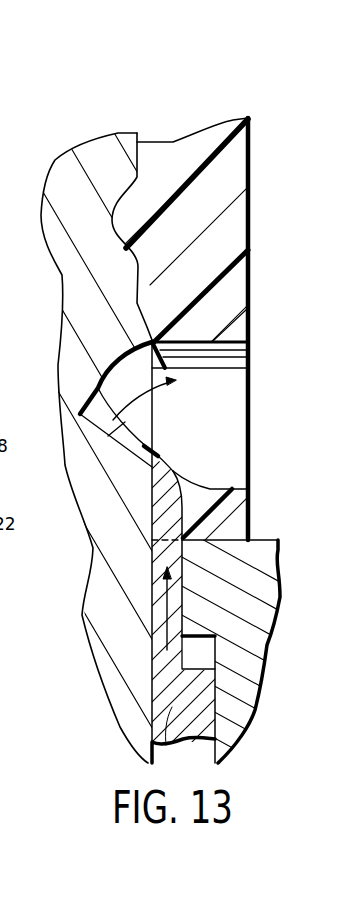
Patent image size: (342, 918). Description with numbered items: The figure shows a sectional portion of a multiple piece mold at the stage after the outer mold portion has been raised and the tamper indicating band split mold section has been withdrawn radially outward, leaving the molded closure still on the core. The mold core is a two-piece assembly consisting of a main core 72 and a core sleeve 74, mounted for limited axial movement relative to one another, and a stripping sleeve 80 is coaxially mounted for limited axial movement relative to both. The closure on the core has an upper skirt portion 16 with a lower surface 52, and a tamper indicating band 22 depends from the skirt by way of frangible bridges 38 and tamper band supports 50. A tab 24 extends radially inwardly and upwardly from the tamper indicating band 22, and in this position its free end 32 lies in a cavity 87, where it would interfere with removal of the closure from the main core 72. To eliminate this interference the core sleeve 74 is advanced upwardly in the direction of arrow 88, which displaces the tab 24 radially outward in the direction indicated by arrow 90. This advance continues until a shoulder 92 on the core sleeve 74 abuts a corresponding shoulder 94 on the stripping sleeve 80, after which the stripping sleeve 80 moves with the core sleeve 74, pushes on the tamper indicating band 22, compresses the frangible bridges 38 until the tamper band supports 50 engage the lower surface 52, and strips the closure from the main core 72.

The main core 72 is at (106, 162).
The upper skirt portion 16 is at (216, 254).
The lower surface 52 is at (226, 345).
The frangible bridges 38 is at (155, 362).
The tamper band supports 50 is at (227, 364).
The free end 32 is at (84, 394).
The cavity 87 is at (116, 378).
The arrow 90 is at (146, 385).
The tab 24 is at (170, 458).
The tamper indicating band 22 is at (232, 518).
The arrow 88 is at (152, 605).
The shoulder 94 is at (203, 640).
The stripping sleeve 80 is at (247, 702).
The core sleeve 74 is at (153, 748).
The shoulder 92 is at (206, 666).